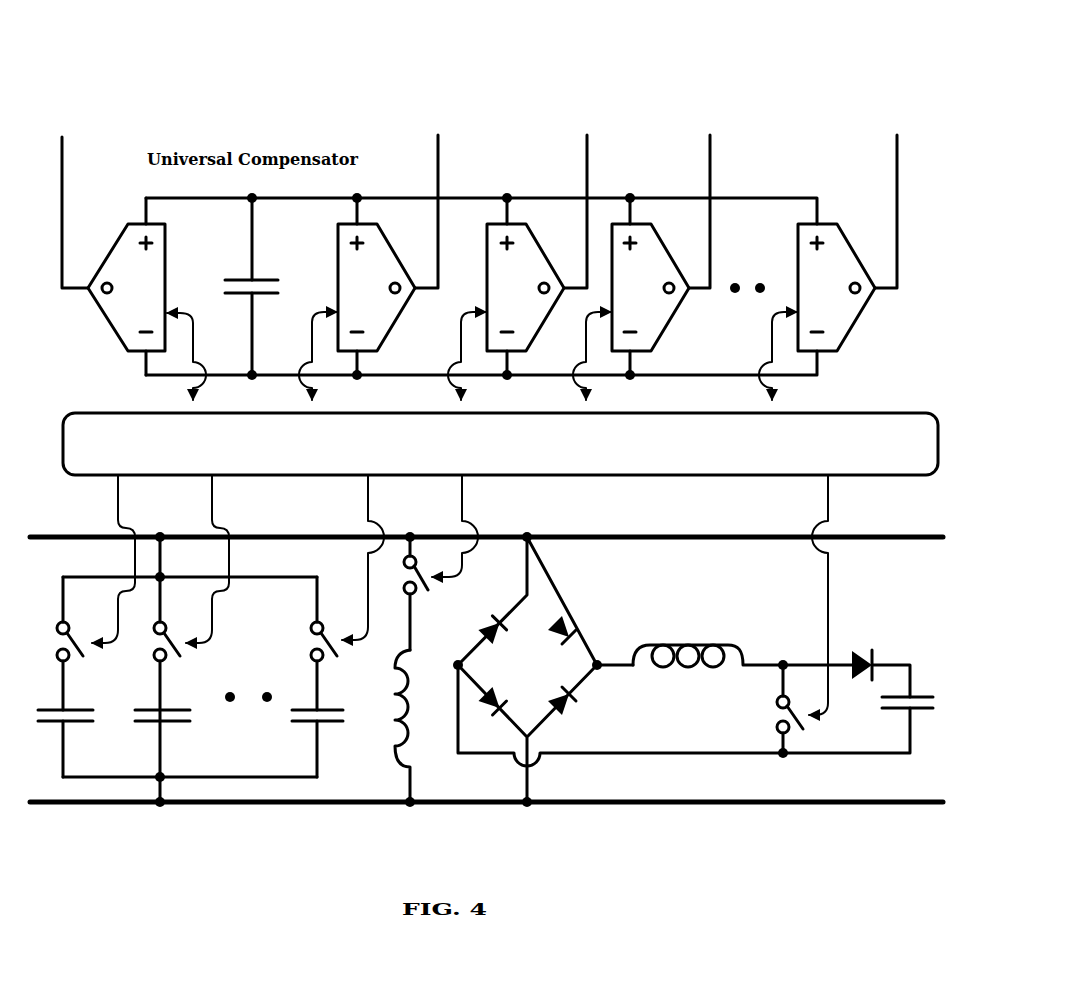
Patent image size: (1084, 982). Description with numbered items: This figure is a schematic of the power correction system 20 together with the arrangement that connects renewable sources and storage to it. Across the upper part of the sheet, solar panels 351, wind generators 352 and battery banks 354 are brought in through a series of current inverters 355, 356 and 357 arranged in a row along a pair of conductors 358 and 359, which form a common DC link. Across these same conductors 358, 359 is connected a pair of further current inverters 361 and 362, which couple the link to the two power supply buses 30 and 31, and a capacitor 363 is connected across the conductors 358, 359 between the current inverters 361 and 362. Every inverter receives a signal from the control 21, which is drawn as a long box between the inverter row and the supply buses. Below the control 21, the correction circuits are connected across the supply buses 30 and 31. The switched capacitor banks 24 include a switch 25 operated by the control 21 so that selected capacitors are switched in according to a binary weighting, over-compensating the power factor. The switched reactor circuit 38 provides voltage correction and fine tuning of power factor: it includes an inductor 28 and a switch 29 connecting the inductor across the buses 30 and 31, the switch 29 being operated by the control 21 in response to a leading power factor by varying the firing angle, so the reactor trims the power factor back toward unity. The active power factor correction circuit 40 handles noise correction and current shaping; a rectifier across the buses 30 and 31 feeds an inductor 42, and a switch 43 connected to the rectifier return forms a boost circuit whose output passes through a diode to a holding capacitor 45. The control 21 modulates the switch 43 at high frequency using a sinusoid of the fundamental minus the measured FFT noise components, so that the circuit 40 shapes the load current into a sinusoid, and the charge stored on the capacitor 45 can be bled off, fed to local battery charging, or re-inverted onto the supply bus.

The power correction system 20 is at (486, 275).
The control 21 is at (887, 432).
The switched capacitor banks 24 is at (194, 649).
The switch 25 is at (290, 641).
The inductor 28 is at (418, 668).
The switch 29 is at (418, 552).
The power supply bus 30 is at (428, 97).
The power supply bus 31 is at (62, 97).
The switched reactor circuit 38 is at (700, 649).
The active power factor correction circuit 40 is at (558, 599).
The inductor 42 is at (728, 643).
The switch 43 is at (770, 713).
The holding capacitor 45 is at (895, 690).
The solar panels 351 is at (598, 97).
The wind generators 352 is at (717, 97).
The battery banks 354 is at (895, 97).
The current inverter 355 is at (520, 238).
The current inverter 356 is at (650, 250).
The current inverter 357 is at (835, 255).
The conductor 358 is at (772, 198).
The conductor 359 is at (700, 375).
The current inverter 361 is at (372, 238).
The current inverter 362 is at (113, 245).
The capacitor 363 is at (262, 275).